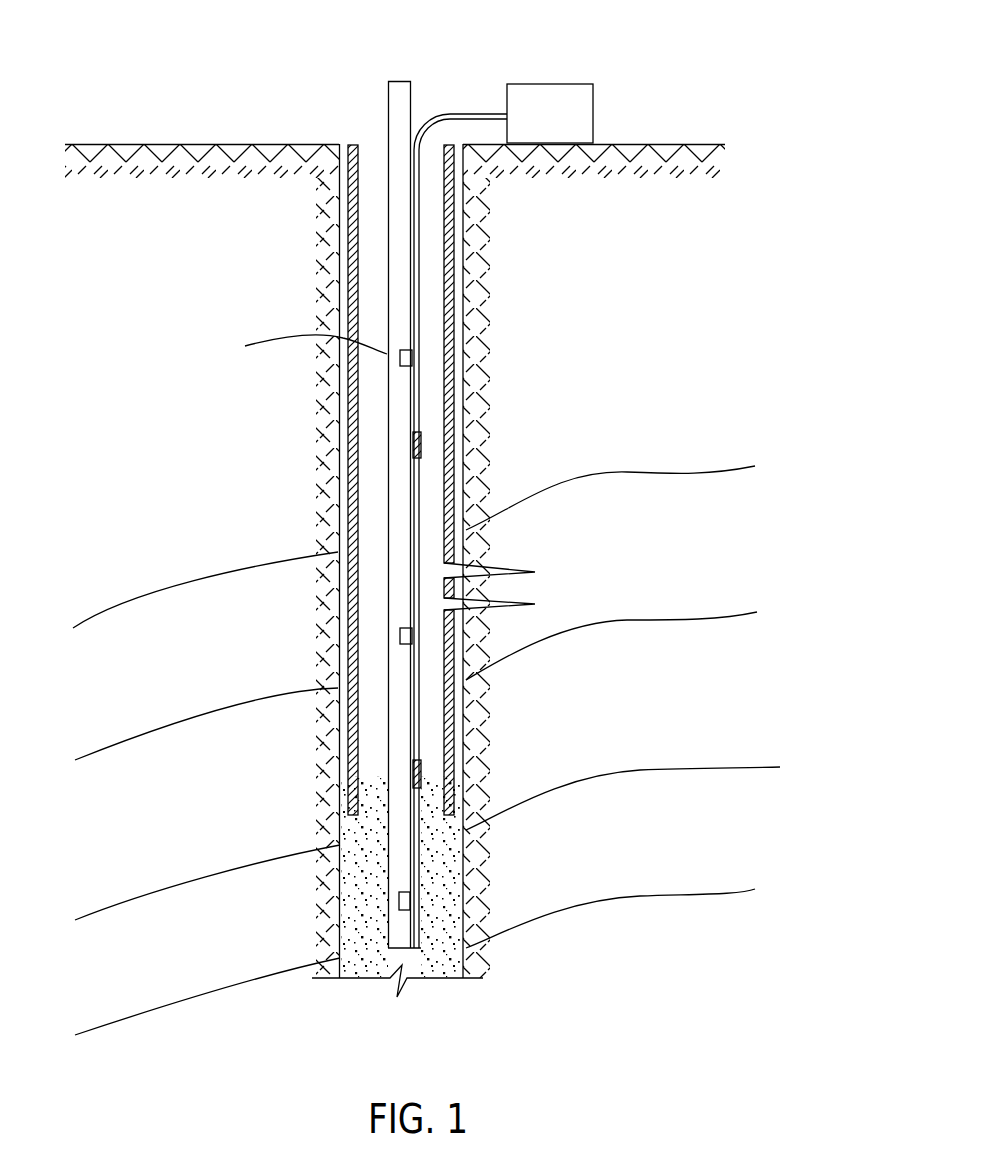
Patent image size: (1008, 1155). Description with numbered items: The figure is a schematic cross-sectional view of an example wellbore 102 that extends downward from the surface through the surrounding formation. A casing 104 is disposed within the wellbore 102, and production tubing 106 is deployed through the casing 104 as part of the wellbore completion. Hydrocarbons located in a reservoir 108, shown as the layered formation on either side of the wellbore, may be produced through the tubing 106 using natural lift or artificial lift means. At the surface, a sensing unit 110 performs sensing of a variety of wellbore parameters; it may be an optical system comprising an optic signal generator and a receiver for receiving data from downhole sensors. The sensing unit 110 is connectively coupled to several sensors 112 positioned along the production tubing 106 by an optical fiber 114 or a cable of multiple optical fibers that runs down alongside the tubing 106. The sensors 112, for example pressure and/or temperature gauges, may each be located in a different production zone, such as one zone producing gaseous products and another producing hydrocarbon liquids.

The wellbore 102 is at (238, 487).
The casing 104 is at (452, 436).
The production tubing 106 is at (397, 103).
The reservoir 108 is at (727, 552).
The sensing unit 110 is at (567, 128).
The sensor 112 is at (408, 359).
The optical fiber 114 is at (462, 112).